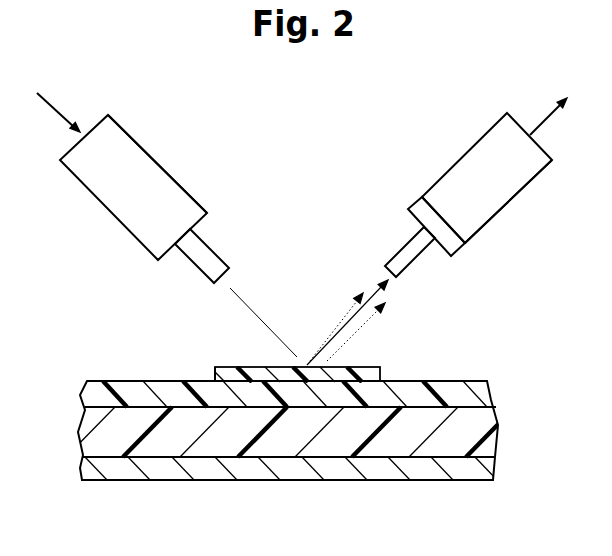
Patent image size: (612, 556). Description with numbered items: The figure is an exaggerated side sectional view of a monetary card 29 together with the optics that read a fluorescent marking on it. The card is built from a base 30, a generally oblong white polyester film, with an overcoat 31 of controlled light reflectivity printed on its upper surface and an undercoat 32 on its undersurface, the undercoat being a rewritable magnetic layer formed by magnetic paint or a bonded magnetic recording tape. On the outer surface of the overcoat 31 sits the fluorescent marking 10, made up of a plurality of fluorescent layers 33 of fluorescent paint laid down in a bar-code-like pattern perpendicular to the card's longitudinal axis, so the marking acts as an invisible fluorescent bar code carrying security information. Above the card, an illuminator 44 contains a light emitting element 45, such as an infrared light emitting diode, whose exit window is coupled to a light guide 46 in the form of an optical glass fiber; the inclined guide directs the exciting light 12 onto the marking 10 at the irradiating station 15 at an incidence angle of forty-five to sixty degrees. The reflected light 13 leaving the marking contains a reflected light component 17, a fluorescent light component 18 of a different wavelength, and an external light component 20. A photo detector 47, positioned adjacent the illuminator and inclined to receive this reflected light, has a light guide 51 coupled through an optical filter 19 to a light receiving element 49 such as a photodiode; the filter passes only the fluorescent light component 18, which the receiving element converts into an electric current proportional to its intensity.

The fluorescent marking 10 is at (253, 366).
The exciting light 12 is at (243, 300).
The reflected light 13 is at (363, 337).
The irradiating station 15 is at (302, 357).
The reflected light component 17 is at (322, 347).
The fluorescent light component 18 is at (374, 317).
The optical filter 19 is at (460, 247).
The external light component 20 is at (352, 292).
The monetary card 29 is at (508, 431).
The base 30 is at (108, 433).
The overcoat 31 is at (113, 382).
The undercoat 32 is at (112, 467).
The fluorescent layers 33 is at (223, 374).
The illuminator 44 is at (138, 127).
The light emitting element 45 is at (167, 172).
The light guide 46 is at (204, 241).
The photo detector 47 is at (436, 170).
The light receiving element 49 is at (503, 197).
The light guide 51 is at (416, 259).